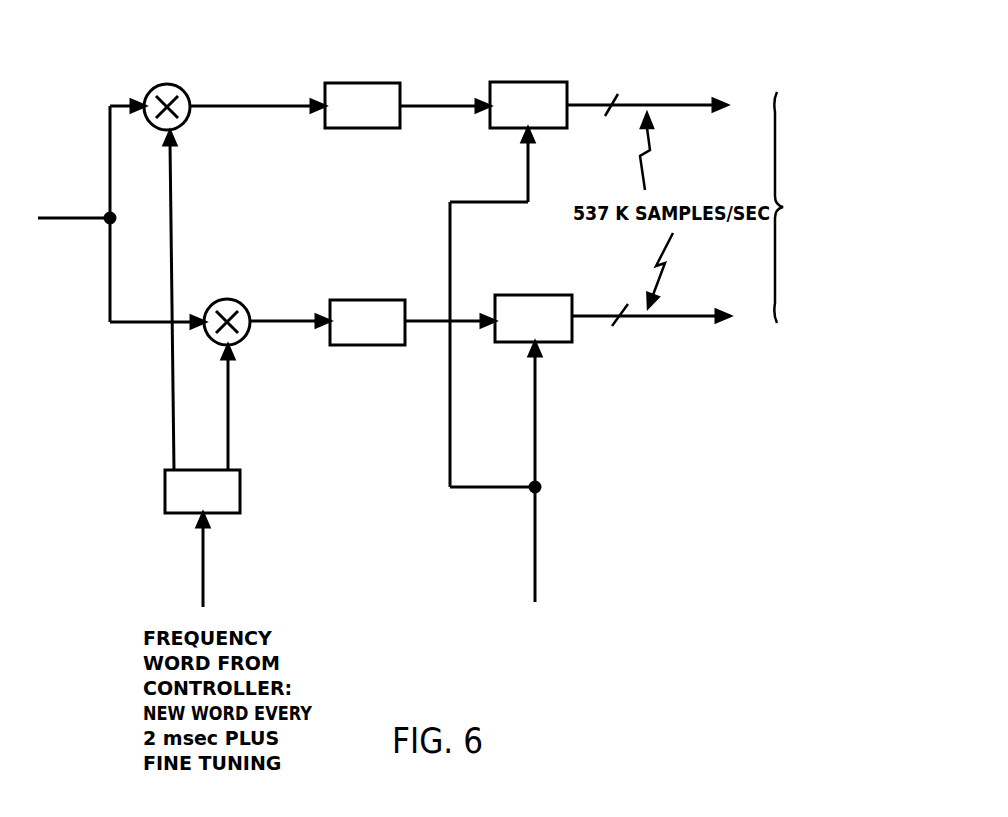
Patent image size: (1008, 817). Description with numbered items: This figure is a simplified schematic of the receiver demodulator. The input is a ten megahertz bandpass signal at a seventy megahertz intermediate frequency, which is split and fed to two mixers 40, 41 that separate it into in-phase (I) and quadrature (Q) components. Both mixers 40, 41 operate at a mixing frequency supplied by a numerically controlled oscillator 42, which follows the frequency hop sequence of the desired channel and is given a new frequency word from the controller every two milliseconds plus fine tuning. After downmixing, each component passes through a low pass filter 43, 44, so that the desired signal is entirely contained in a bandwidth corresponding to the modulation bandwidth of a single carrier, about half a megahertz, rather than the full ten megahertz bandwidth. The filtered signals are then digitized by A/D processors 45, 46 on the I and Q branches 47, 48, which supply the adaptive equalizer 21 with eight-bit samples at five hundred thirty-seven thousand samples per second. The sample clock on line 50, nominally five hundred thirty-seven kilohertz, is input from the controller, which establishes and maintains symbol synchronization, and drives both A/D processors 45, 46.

The adaptive equalizer 21 is at (834, 207).
The mixer 40 is at (190, 90).
The mixer 41 is at (231, 298).
The numerically controlled oscillator 42 is at (232, 502).
The low pass filter 43 is at (385, 82).
The low pass filter 44 is at (363, 300).
The A/D processor 45 is at (533, 82).
The A/D processor 46 is at (525, 295).
The I branch 47 is at (685, 106).
The Q branch 48 is at (667, 318).
The sample clock line 50 is at (538, 533).